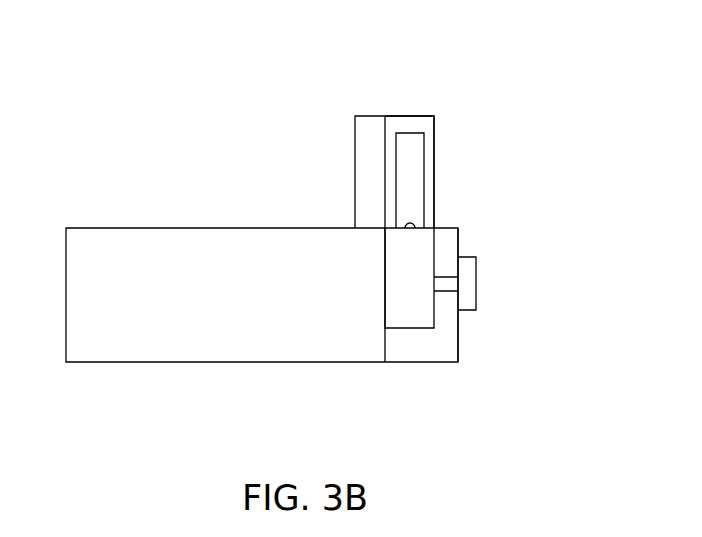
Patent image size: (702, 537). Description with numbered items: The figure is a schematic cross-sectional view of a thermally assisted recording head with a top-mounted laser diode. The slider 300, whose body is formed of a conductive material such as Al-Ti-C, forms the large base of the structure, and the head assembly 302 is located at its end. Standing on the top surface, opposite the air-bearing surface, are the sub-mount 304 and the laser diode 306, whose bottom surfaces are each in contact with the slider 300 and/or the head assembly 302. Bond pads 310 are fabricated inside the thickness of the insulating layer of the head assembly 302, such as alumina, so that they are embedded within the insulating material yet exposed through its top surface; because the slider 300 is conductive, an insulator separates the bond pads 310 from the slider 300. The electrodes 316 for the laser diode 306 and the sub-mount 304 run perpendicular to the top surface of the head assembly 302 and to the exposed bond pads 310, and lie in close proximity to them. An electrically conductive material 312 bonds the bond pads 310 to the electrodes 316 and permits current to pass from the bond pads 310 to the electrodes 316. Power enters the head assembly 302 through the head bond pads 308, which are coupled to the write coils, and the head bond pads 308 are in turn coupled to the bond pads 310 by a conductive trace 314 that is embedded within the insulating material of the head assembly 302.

The slider 300 is at (108, 252).
The head assembly 302 is at (430, 350).
The sub-mount 304 is at (372, 128).
The laser diode 306 is at (428, 162).
The head bond pads 308 is at (470, 288).
The bond pads 310 is at (417, 245).
The electrically conductive material 312 is at (407, 223).
The conductive trace 314 is at (445, 283).
The electrodes 316 is at (412, 148).